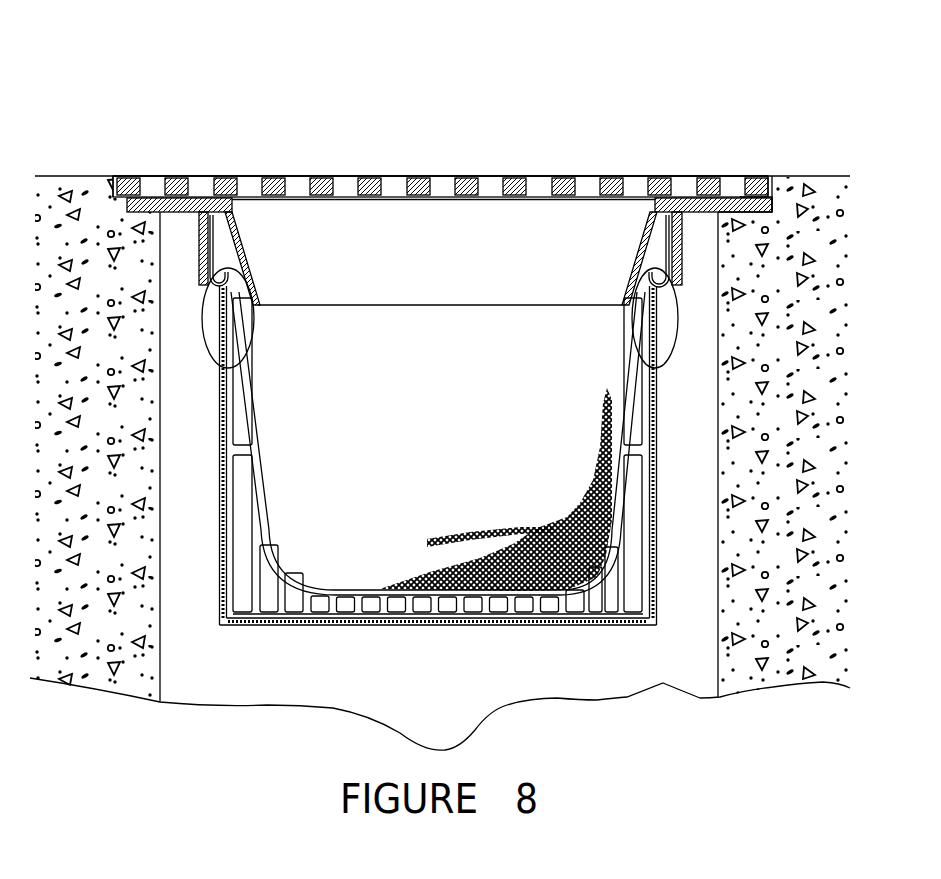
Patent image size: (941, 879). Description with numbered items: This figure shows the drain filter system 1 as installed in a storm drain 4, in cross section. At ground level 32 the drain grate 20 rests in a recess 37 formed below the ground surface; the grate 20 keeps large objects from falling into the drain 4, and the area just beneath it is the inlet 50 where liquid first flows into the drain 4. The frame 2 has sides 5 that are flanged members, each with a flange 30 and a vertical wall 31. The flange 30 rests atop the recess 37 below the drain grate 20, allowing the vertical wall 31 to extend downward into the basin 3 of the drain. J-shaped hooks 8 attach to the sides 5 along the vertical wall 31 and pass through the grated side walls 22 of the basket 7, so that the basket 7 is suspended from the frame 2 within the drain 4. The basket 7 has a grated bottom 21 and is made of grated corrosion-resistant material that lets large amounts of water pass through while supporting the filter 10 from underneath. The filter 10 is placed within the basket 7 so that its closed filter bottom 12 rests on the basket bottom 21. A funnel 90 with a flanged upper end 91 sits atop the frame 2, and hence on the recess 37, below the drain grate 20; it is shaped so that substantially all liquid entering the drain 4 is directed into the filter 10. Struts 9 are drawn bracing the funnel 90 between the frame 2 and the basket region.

The drain filter system 1 is at (250, 664).
The frame 2 is at (667, 194).
The basin 3 is at (678, 650).
The drain 4 is at (480, 128).
The sides 5 is at (197, 235).
The basket 7 is at (483, 622).
The J-shaped hooks 8 is at (228, 364).
The support strut 9 is at (258, 295).
The filter 10 is at (387, 435).
The filter bottom 12 is at (342, 598).
The drain grate 20 is at (752, 194).
The grated bottom 21 is at (407, 625).
The grated side walls 22 is at (258, 575).
The flange 30 is at (725, 194).
The vertical wall 31 is at (682, 258).
The ground level 32 is at (817, 174).
The recess 37 is at (763, 212).
The inlet 50 is at (104, 168).
The funnel 90 is at (468, 268).
The flanged upper end 91 is at (155, 198).